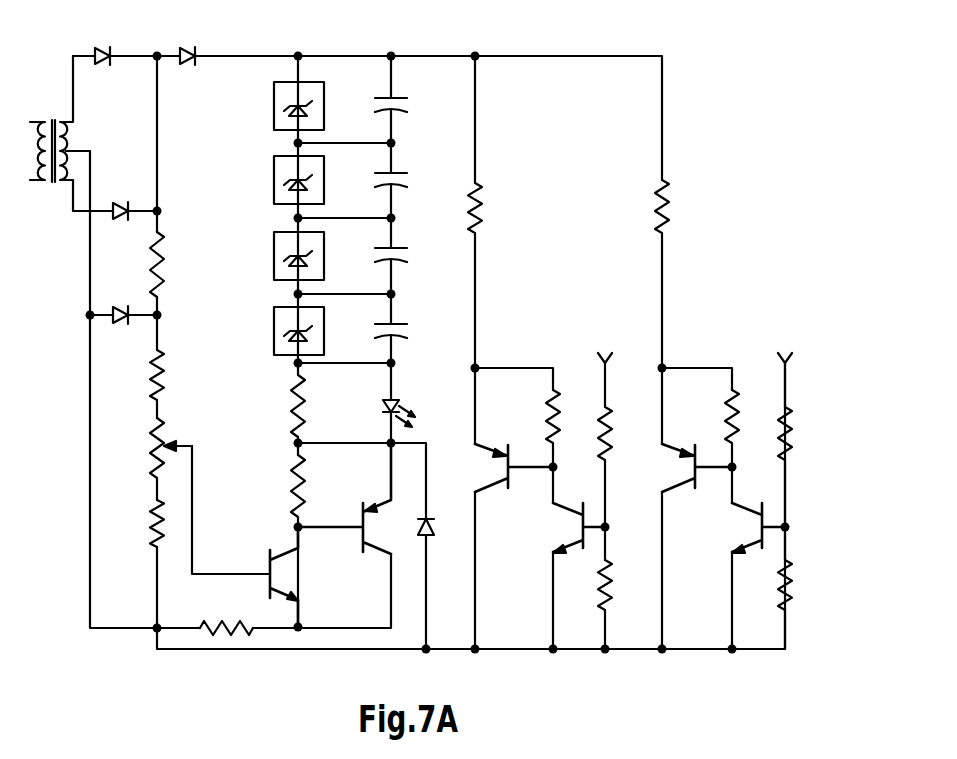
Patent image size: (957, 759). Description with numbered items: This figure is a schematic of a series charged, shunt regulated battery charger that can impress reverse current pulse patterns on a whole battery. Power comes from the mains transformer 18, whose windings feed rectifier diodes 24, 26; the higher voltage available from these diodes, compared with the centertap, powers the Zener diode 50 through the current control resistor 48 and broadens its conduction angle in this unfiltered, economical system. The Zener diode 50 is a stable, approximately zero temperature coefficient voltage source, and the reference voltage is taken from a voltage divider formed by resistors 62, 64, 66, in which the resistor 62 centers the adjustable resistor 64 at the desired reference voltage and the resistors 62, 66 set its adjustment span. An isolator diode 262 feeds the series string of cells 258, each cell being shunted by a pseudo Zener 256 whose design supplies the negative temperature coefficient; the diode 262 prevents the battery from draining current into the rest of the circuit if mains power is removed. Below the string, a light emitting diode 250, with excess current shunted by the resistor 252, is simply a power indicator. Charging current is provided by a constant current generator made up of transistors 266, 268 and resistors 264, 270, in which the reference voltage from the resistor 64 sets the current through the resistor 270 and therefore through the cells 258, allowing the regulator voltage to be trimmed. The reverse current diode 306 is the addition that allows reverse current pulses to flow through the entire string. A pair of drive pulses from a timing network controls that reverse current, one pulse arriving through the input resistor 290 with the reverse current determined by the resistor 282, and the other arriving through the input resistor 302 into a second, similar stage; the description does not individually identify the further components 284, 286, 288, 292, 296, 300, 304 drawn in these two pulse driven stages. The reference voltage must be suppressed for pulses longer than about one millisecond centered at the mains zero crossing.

The mains transformer 18 is at (56, 186).
The rectifier diode 24 is at (97, 52).
The rectifier diode 26 is at (116, 203).
The current control resistor 48 is at (163, 265).
The Zener diode 50 is at (116, 306).
The resistor 62 is at (163, 378).
The resistor 64 is at (152, 460).
The resistor 66 is at (152, 535).
The light emitting diode 250 is at (383, 404).
The resistor 252 is at (291, 410).
The pseudo Zener 256 is at (274, 343).
The cells 258 is at (421, 345).
The diode 262 is at (189, 50).
The resistor 264 is at (292, 478).
The transistor 266 is at (288, 553).
The transistor 268 is at (380, 547).
The resistor 270 is at (229, 620).
The resistor 282 is at (481, 212).
The resistor / transistor 284 is at (487, 490).
The resistor 286 is at (542, 425).
The transistor / resistor 288 is at (735, 405).
The resistor 290 is at (608, 432).
The resistor 292 is at (610, 578).
The transistor 296 is at (677, 487).
The transistor 300 is at (742, 540).
The resistor 302 is at (790, 447).
The resistor 304 is at (792, 602).
The reverse current diode 306 is at (432, 533).